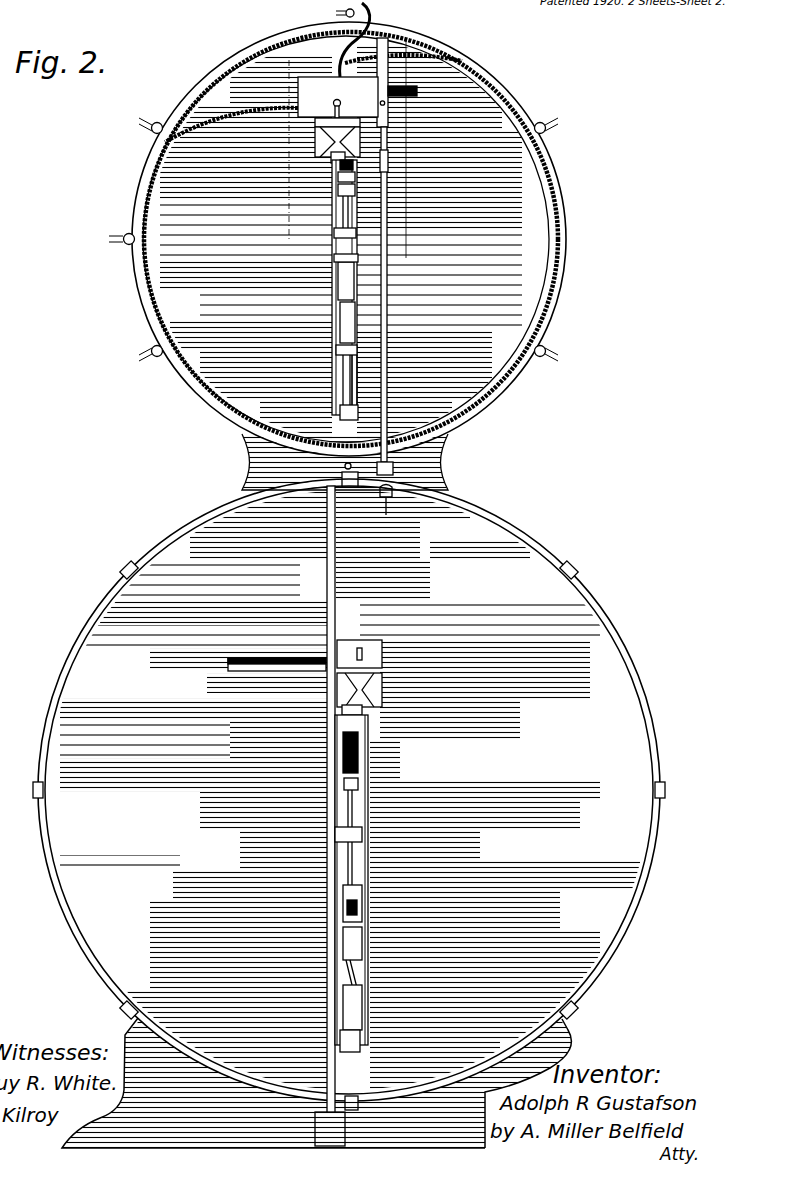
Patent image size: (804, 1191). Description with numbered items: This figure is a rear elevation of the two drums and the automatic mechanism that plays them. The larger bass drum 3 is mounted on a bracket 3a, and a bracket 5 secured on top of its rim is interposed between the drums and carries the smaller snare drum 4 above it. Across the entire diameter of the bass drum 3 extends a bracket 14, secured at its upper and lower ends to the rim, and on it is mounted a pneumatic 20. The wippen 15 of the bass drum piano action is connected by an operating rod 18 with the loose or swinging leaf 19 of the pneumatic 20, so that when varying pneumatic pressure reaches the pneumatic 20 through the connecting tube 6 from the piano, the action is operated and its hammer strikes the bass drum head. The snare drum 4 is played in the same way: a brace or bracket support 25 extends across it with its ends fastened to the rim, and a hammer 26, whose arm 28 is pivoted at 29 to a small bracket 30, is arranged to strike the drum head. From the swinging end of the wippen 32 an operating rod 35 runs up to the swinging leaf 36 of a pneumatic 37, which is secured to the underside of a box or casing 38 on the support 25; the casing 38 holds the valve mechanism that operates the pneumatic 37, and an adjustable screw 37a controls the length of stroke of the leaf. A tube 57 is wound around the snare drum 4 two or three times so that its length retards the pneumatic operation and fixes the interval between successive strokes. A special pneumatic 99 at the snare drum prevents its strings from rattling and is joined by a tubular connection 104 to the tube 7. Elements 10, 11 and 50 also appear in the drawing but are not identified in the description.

The bass drum 3 is at (518, 543).
The bracket 3a is at (112, 1036).
The snare drum 4 is at (528, 302).
The bracket 5 is at (452, 467).
The connecting tube 6 is at (262, 665).
The tube 7 is at (416, 92).
The valve member 10 is at (342, 752).
The collar 11 is at (335, 833).
The bracket 14 is at (323, 1003).
The wippen 15 is at (362, 1046).
The operating rod 18 is at (368, 762).
The swinging leaf 19 is at (341, 713).
The pneumatic 20 is at (384, 660).
The bracket support 25 is at (358, 388).
The hammer 26 is at (389, 162).
The arm 28 is at (358, 201).
The pivot 29 is at (386, 262).
The small bracket 30 is at (331, 156).
The wippen 32 is at (340, 416).
The operating rod 35 is at (331, 198).
The swinging leaf 36 is at (608, 604).
The pneumatic 37 is at (315, 123).
The adjustable screw 37a is at (334, 104).
The box or casing 38 is at (298, 84).
The hook 50 is at (332, 68).
The tube 57 is at (458, 63).
The special pneumatic 99 is at (412, 218).
The tubular connection 104 is at (505, 92).